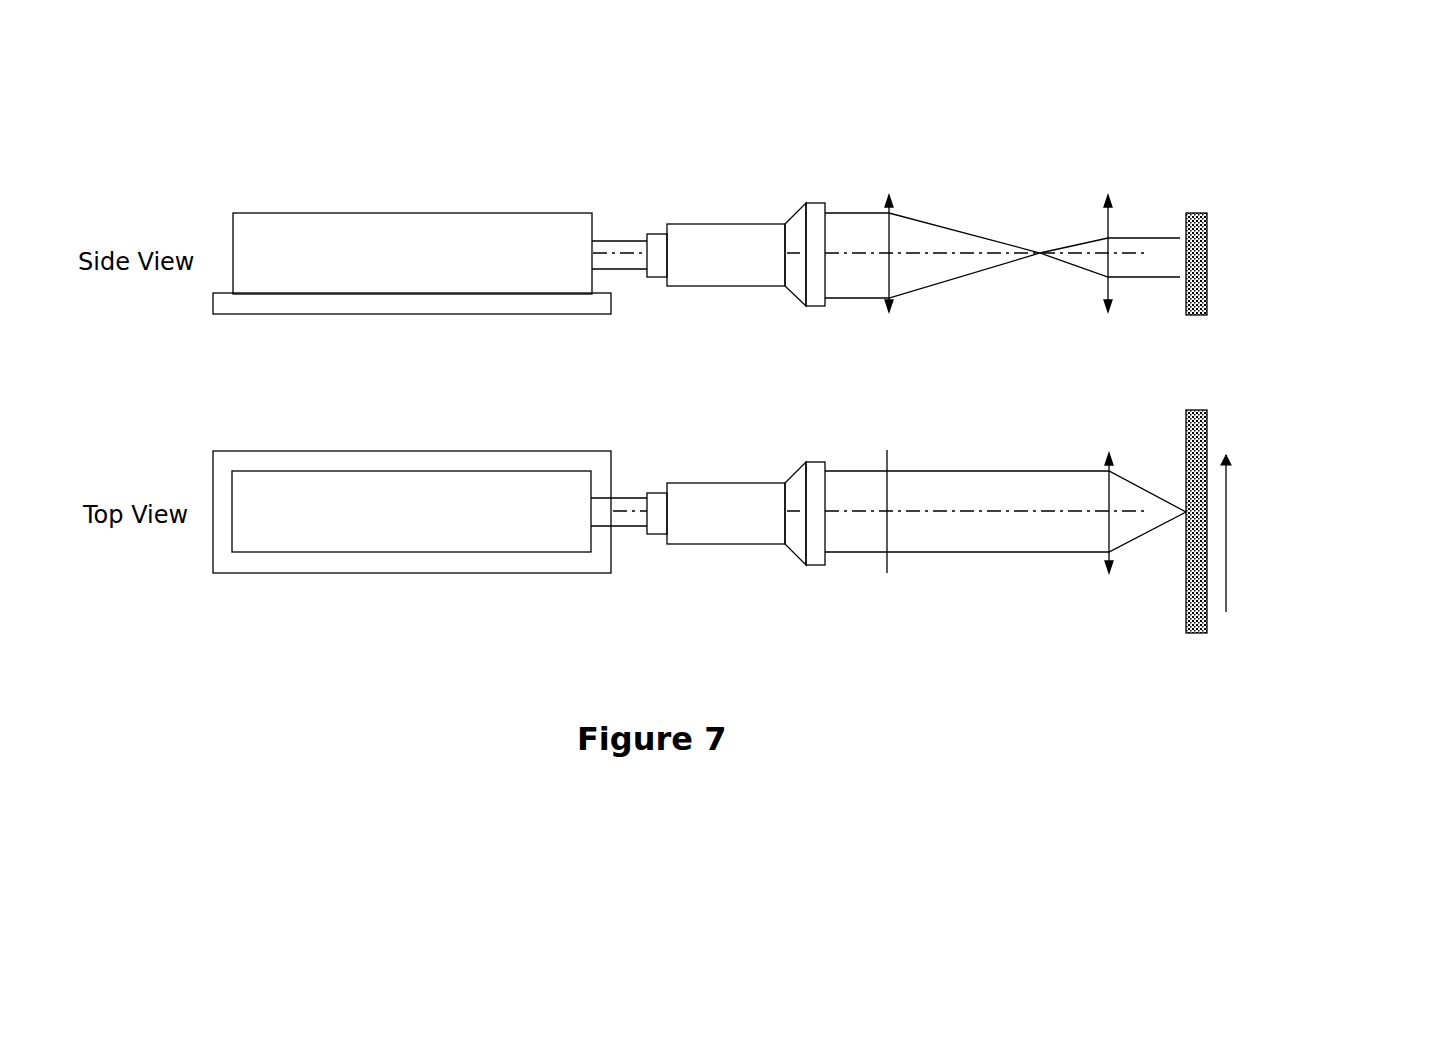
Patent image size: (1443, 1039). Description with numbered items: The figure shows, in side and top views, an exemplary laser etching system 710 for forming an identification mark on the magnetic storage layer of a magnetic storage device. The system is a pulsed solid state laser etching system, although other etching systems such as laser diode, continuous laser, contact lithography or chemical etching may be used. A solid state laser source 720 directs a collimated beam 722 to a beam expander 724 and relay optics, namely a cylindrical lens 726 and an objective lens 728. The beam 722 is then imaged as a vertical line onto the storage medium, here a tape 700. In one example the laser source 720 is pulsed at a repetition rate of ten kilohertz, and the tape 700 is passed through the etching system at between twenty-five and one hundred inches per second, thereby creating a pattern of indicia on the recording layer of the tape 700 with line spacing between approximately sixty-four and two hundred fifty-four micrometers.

The laser etching system 710 is at (388, 123).
The solid state laser source 720 is at (421, 501).
The collimated beam 722 is at (621, 254).
The beam expander 724 is at (751, 273).
The cylindrical lens 726 is at (892, 278).
The objective lens 728 is at (1109, 490).
The tape 700 is at (1205, 277).